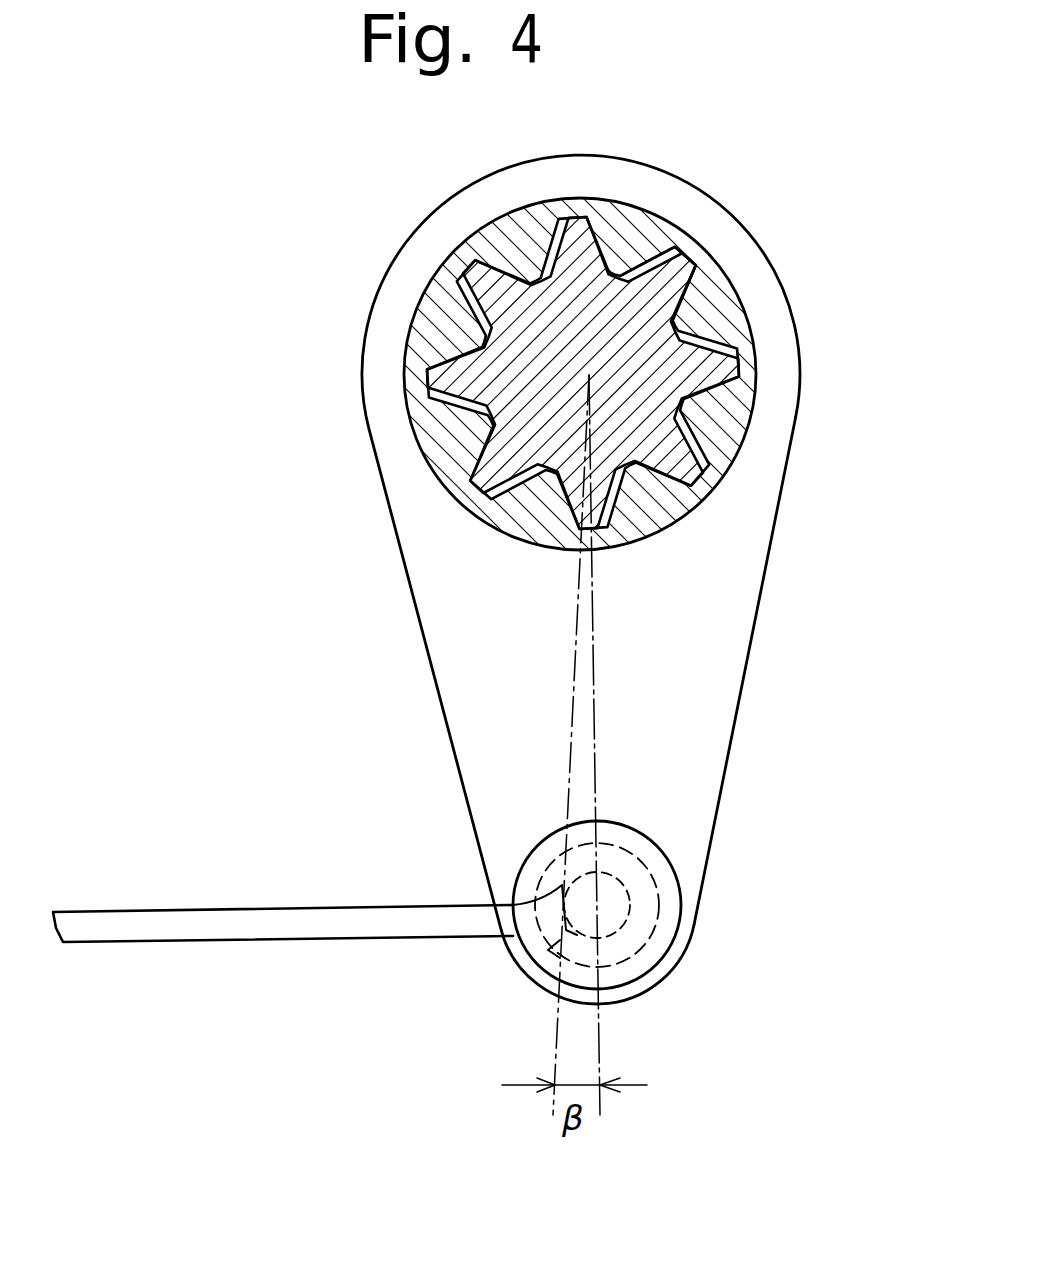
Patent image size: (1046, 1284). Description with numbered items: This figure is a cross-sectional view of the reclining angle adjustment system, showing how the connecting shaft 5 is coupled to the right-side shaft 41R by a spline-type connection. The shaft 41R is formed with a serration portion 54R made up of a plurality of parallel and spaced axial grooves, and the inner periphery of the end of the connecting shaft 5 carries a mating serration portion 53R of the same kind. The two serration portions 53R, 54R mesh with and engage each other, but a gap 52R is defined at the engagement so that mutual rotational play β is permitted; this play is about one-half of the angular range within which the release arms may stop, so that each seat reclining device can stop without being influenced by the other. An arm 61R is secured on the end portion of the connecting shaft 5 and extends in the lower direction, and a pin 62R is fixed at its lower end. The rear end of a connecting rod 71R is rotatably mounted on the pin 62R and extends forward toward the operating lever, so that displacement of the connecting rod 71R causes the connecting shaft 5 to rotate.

The connecting shaft 5 is at (747, 210).
The shaft 41R is at (622, 425).
The gap 52R is at (703, 460).
The serration portion 53R is at (657, 268).
The serration portion 54R is at (710, 345).
The arm 61R is at (723, 693).
The pin 62R is at (667, 852).
The connecting rod 71R is at (323, 938).